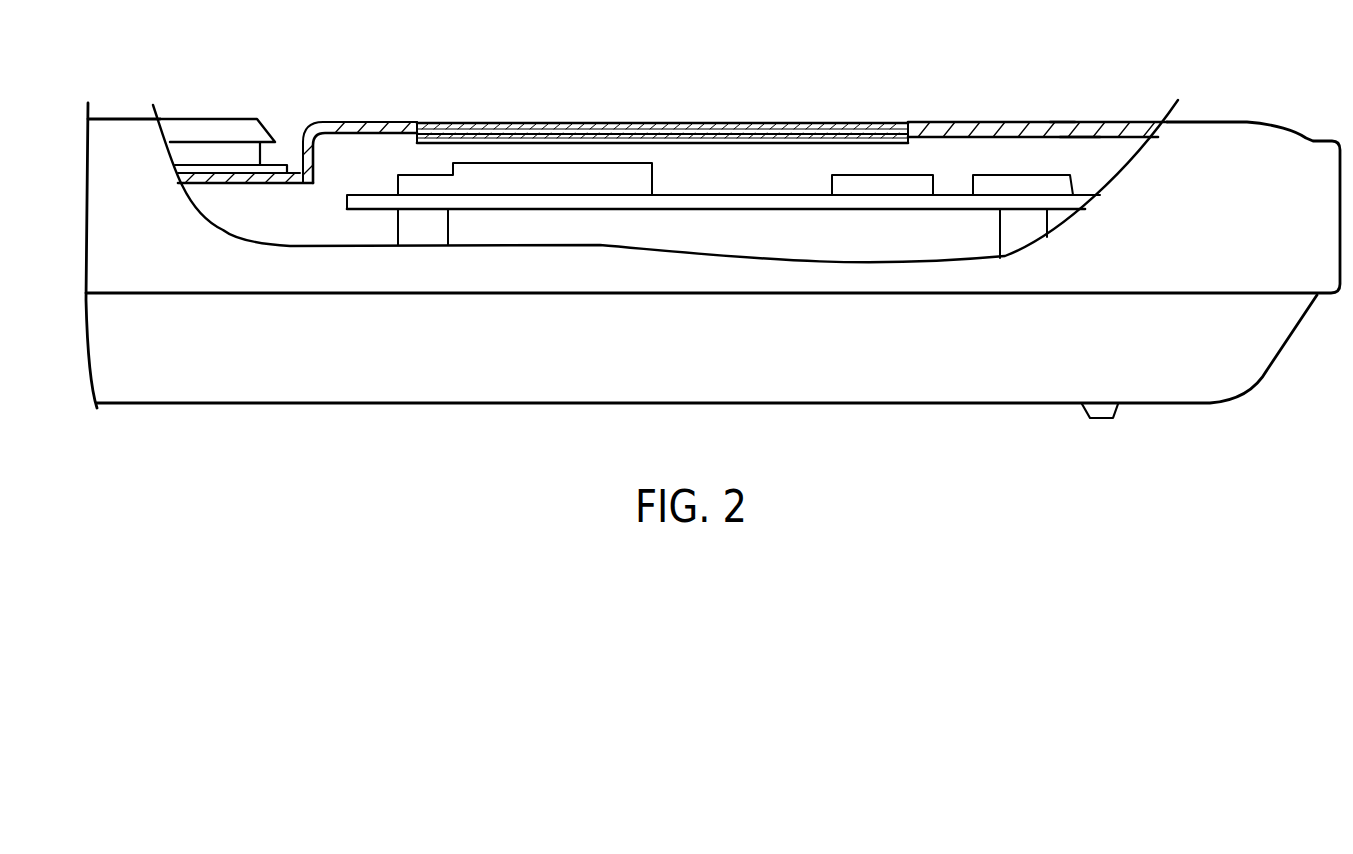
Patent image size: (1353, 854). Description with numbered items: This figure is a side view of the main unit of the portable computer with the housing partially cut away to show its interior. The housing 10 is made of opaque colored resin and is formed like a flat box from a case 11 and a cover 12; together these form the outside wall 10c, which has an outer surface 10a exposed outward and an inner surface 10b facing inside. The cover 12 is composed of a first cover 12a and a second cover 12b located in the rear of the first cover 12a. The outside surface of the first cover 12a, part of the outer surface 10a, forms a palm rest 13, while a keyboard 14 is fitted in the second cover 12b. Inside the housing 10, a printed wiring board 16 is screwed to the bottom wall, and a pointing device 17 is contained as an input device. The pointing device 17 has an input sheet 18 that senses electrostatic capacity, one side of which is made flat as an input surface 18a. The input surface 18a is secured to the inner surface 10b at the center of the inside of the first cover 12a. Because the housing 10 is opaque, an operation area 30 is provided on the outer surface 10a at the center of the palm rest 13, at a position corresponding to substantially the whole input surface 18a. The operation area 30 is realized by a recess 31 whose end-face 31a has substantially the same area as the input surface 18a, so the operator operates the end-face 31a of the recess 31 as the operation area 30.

The housing 10 is at (1267, 121).
The outer surface 10a is at (990, 122).
The inner surface 10b is at (1085, 139).
The outside wall 10c is at (1060, 122).
The case 11 is at (620, 398).
The cover 12 is at (380, 55).
The first cover 12a is at (350, 121).
The second cover 12b is at (279, 168).
The palm rest 13 is at (1197, 121).
The keyboard 14 is at (217, 153).
The printed wiring board 16 is at (917, 200).
The pointing device 17 is at (777, 147).
The input sheet 18 is at (710, 147).
The input surface 18a is at (813, 122).
The operation area 30 is at (669, 121).
The recess 31 is at (902, 122).
The end-face 31a is at (597, 122).